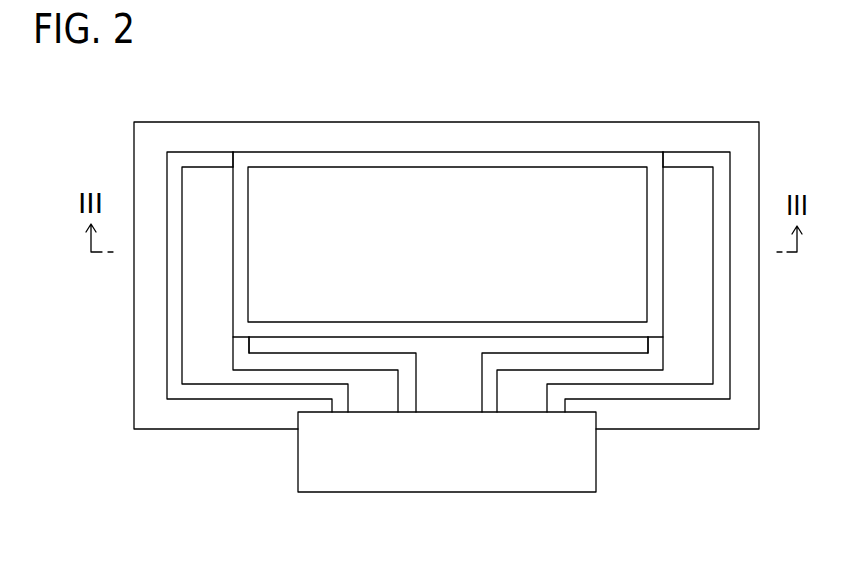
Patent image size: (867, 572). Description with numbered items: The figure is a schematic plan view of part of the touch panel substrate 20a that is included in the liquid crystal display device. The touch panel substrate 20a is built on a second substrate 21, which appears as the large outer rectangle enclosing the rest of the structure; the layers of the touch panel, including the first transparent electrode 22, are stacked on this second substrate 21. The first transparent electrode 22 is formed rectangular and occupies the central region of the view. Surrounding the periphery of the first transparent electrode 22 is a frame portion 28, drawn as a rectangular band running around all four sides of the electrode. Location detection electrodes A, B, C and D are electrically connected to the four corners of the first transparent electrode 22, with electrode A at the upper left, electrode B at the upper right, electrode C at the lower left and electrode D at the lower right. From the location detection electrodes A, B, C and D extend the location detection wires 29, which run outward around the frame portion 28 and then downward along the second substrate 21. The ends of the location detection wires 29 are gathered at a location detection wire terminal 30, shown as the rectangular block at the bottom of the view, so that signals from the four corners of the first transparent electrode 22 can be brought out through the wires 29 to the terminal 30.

The touch panel substrate 20a is at (246, 57).
The second substrate 21 is at (748, 347).
The first transparent electrode 22 is at (615, 268).
The frame portion 28 is at (445, 163).
The location detection wires 29 is at (620, 362).
The location detection wire terminal 30 is at (473, 477).
The location detection electrode A is at (217, 159).
The location detection electrode B is at (672, 154).
The location detection electrode C is at (234, 346).
The location detection electrode D is at (654, 350).